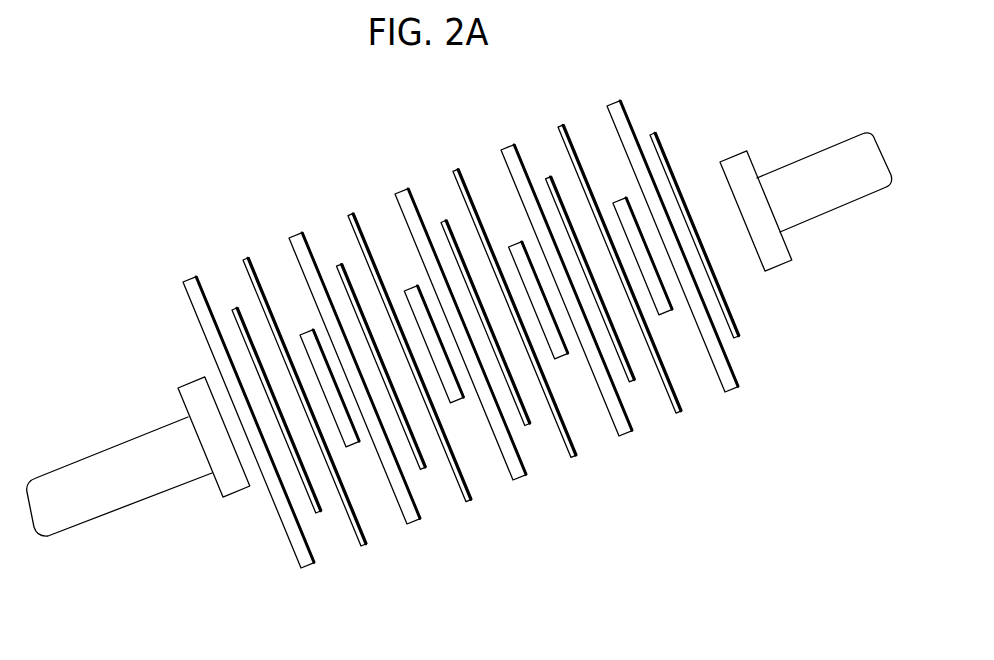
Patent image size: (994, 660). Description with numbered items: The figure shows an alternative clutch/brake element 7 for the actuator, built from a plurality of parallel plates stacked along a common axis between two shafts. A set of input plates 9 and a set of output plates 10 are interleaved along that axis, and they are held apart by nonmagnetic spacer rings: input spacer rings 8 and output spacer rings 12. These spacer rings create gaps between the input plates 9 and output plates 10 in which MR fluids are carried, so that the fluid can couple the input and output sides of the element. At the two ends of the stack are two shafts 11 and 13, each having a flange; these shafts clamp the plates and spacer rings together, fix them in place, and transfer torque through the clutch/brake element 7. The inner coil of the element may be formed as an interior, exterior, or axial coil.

The clutch/brake element 7 is at (203, 142).
The input spacer ring 8 is at (200, 307).
The input plate 9 is at (348, 222).
The output plate 10 is at (665, 152).
The shaft 11 is at (150, 465).
The output spacer ring 12 is at (555, 343).
The shaft 13 is at (810, 203).